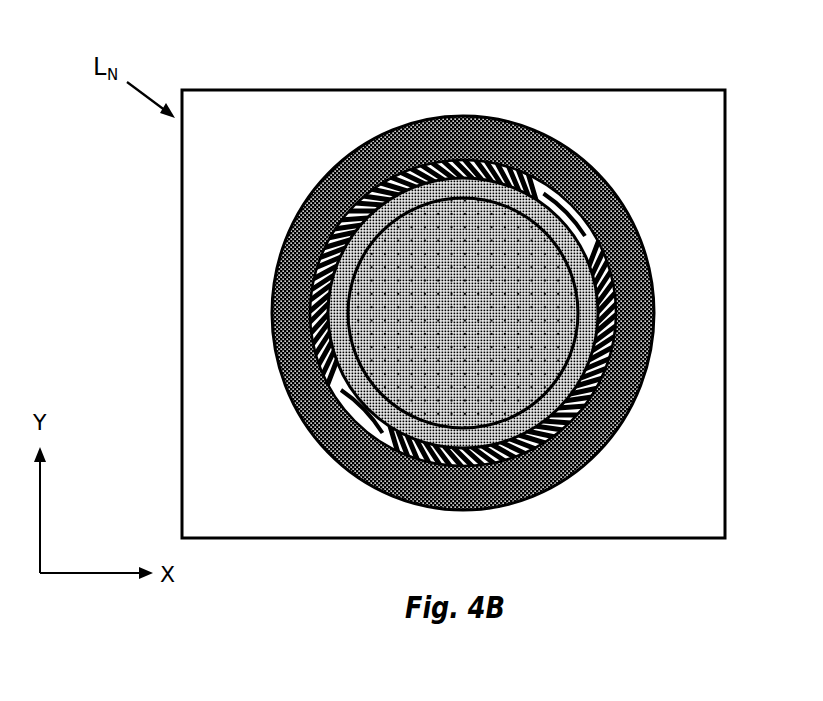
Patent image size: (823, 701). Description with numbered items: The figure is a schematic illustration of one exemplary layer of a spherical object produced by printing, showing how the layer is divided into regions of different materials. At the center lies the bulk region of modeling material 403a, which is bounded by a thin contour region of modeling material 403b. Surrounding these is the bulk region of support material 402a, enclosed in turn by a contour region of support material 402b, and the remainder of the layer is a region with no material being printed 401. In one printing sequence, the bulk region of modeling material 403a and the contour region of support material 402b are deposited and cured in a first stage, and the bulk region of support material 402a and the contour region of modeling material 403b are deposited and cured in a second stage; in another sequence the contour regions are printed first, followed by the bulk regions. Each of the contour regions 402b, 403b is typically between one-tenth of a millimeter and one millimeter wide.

The region with no material being printed 401 is at (648, 107).
The bulk region of support material 402a is at (607, 190).
The contour region of support material 402b is at (628, 220).
The bulk region of modeling material 403a is at (488, 330).
The contour region of modeling material 403b is at (336, 449).